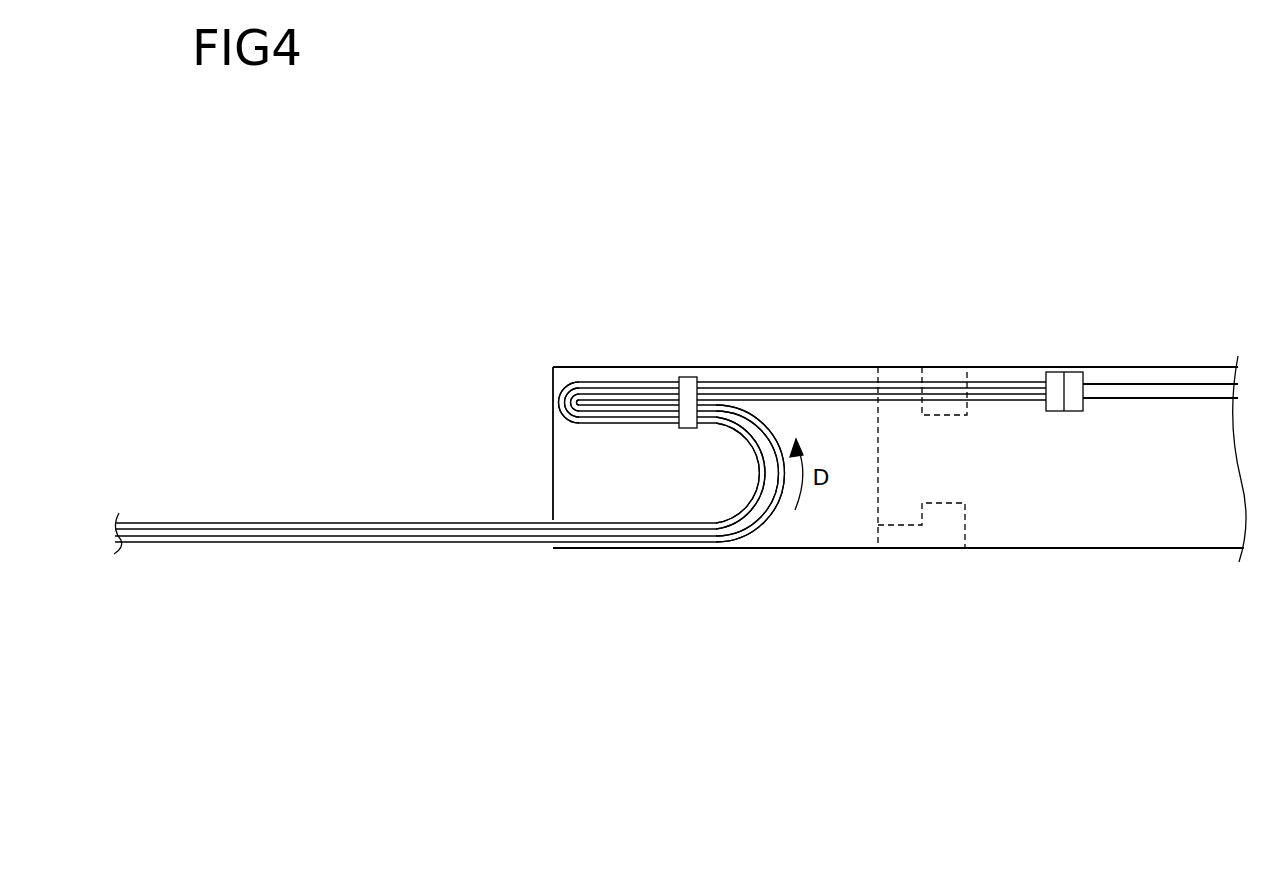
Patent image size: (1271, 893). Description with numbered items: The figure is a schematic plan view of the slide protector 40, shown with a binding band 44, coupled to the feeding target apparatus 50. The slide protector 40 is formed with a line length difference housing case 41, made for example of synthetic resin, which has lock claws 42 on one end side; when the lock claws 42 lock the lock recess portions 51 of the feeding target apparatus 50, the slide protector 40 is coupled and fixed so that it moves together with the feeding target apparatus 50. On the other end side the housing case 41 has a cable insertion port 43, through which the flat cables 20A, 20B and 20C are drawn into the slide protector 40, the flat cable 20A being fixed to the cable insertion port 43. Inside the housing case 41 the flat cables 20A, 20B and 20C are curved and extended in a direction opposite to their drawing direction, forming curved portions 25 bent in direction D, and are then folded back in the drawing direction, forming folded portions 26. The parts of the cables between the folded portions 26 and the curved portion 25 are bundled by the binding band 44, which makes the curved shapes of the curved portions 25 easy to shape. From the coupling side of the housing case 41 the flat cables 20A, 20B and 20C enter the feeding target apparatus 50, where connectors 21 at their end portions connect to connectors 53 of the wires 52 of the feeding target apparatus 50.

The flat cable 20A is at (283, 524).
The flat cable 20B is at (340, 532).
The flat cable 20C is at (385, 543).
The connector 21 is at (1057, 372).
The curved portion 25 is at (775, 506).
The folded portion 26 is at (602, 378).
The slide protector 40 is at (747, 366).
The line length difference housing case 41 is at (820, 549).
The lock claw 42 is at (938, 372).
The cable insertion port 43 is at (552, 518).
The binding band 44 is at (705, 377).
The feeding target apparatus 50 is at (1088, 548).
The lock recess portion 51 is at (965, 380).
The wire 52 is at (1185, 392).
The connector 53 is at (1075, 372).